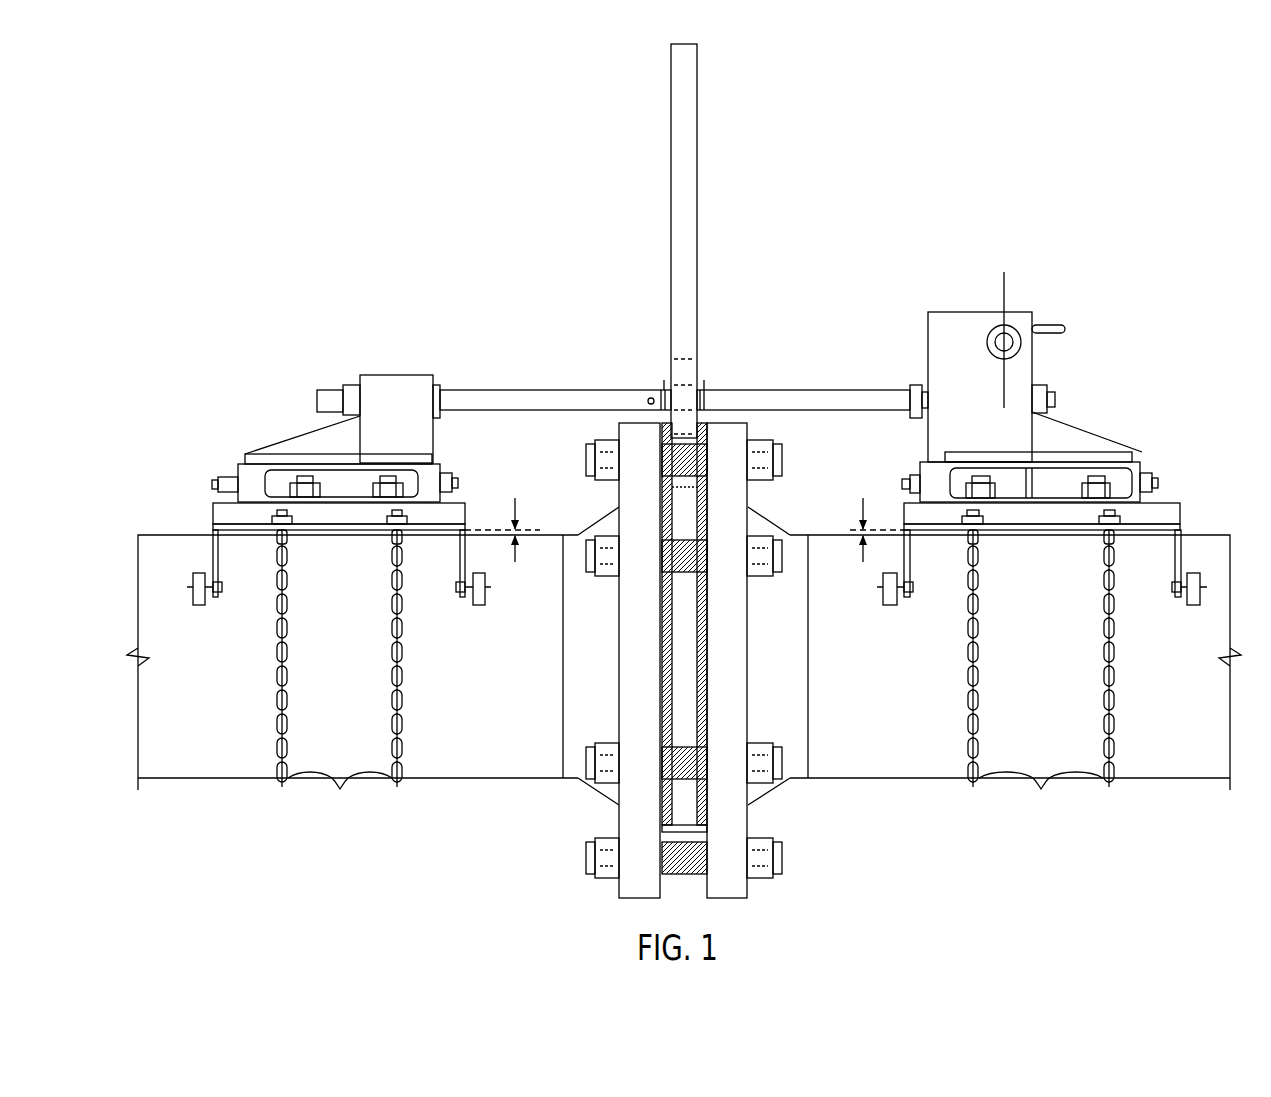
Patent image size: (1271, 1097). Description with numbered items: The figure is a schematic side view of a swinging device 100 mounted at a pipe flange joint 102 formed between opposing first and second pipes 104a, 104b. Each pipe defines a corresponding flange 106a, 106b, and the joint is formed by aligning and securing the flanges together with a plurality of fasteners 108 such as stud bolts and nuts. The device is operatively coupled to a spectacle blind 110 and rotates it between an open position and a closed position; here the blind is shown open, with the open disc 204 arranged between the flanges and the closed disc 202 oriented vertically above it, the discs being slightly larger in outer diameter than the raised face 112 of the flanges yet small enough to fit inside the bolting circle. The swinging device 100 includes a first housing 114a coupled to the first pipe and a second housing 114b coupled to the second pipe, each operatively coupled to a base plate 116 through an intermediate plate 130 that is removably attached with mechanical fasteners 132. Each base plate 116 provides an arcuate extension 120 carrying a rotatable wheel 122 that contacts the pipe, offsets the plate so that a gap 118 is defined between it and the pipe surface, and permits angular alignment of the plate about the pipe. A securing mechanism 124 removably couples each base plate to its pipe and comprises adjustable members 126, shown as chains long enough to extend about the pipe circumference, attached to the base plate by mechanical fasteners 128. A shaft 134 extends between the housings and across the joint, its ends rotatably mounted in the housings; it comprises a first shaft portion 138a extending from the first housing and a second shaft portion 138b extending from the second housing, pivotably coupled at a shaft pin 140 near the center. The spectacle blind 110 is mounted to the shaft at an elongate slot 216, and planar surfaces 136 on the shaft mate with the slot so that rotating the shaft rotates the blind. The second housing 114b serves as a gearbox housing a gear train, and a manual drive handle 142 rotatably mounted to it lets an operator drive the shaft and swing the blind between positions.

The swinging device 100 is at (242, 178).
The pipe flange joint 102 is at (680, 618).
The first pipe 104a is at (208, 773).
The second pipe 104b is at (1190, 773).
The flange 106a is at (628, 432).
The flange 106b is at (738, 432).
The fasteners 108 is at (783, 546).
The spectacle blind 110 is at (691, 241).
The raised face 112 is at (703, 642).
The first housing 114a is at (387, 373).
The second housing 114b is at (963, 310).
The base plate 116 is at (213, 512).
The gap 118 is at (515, 498).
The arcuate extension 120 is at (224, 592).
The wheel 122 is at (199, 606).
The securing mechanism 124 is at (402, 756).
The adjustable member 126 is at (695, 794).
The mechanical fasteners 128 is at (392, 525).
The intermediate plate 130 is at (243, 465).
The mechanical fasteners 132 is at (388, 476).
The shaft 134 is at (678, 347).
The planar surfaces 136 is at (667, 385).
The first shaft portion 138a is at (490, 389).
The second shaft portion 138b is at (884, 389).
The shaft pin 140 is at (650, 397).
The manual drive handle 142 is at (1013, 330).
The closed disc 202 is at (690, 178).
The open disc 204 is at (690, 690).
The elongate slot 216 is at (691, 430).